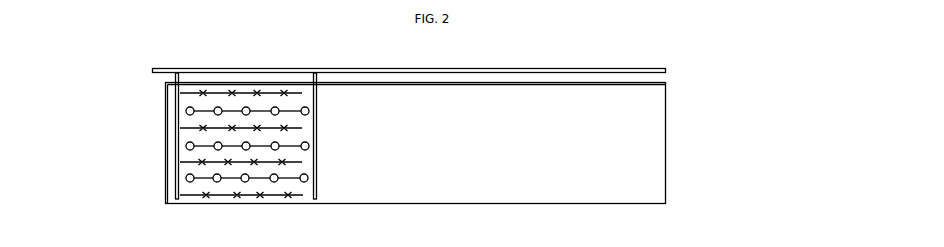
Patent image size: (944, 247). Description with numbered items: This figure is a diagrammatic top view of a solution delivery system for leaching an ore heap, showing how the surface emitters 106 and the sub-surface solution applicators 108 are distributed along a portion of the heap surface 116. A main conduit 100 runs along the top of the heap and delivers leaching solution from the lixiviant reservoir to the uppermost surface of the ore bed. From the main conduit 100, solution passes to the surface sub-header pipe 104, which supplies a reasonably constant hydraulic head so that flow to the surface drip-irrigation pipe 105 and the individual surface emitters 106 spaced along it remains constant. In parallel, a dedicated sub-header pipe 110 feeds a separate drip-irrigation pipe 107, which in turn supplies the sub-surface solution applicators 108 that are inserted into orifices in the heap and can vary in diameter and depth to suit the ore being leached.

The main conduit 100 is at (152, 71).
The surface sub-header pipe 104 is at (175, 120).
The surface drip-irrigation pipe 105 is at (191, 129).
The surface emitters 106 is at (192, 165).
The drip-irrigation pipe 107 is at (285, 165).
The sub-surface solution applicator 108 is at (310, 182).
The dedicated sub-header pipe 110 is at (318, 120).
The heap surface 116 is at (416, 143).